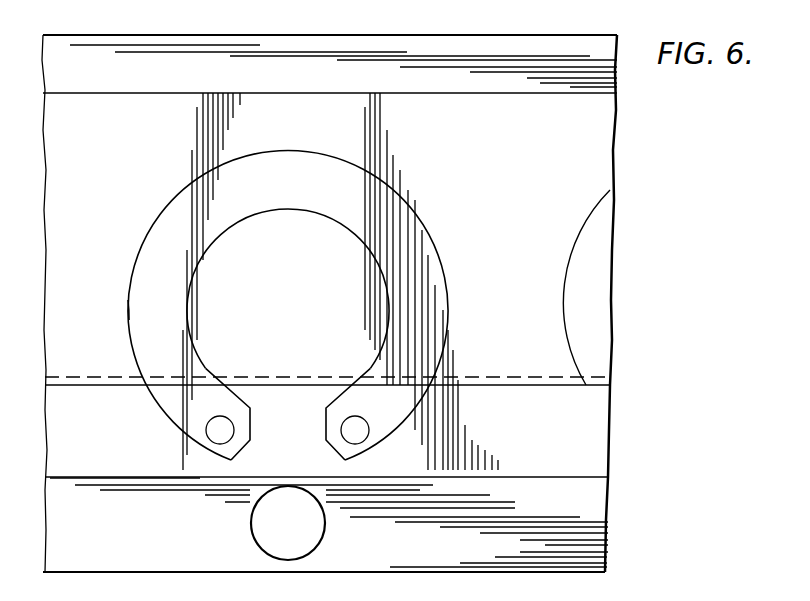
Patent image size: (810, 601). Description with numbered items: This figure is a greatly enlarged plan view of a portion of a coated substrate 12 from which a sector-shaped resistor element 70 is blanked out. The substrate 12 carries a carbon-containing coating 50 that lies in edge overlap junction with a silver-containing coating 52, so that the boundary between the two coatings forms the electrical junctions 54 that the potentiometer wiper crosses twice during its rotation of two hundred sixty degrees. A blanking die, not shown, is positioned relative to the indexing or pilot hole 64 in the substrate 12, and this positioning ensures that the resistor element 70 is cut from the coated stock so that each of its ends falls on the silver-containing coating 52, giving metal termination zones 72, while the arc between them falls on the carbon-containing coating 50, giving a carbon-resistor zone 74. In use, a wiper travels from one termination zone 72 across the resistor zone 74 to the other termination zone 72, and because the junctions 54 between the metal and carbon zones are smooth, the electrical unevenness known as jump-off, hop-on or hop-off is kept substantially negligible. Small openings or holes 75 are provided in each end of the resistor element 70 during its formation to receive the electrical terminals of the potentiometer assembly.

The substrate 12 is at (460, 49).
The carbon-containing coating 50 is at (333, 110).
The silver-containing coating 52 is at (539, 446).
The electrical junctions 54 is at (537, 378).
The indexing or pilot hole 64 is at (257, 540).
The sector-shaped resistor element 70 is at (449, 263).
The metal termination zones 72 is at (168, 412).
The carbon-resistor zone 74 is at (140, 306).
The small openings or holes 75 is at (347, 432).